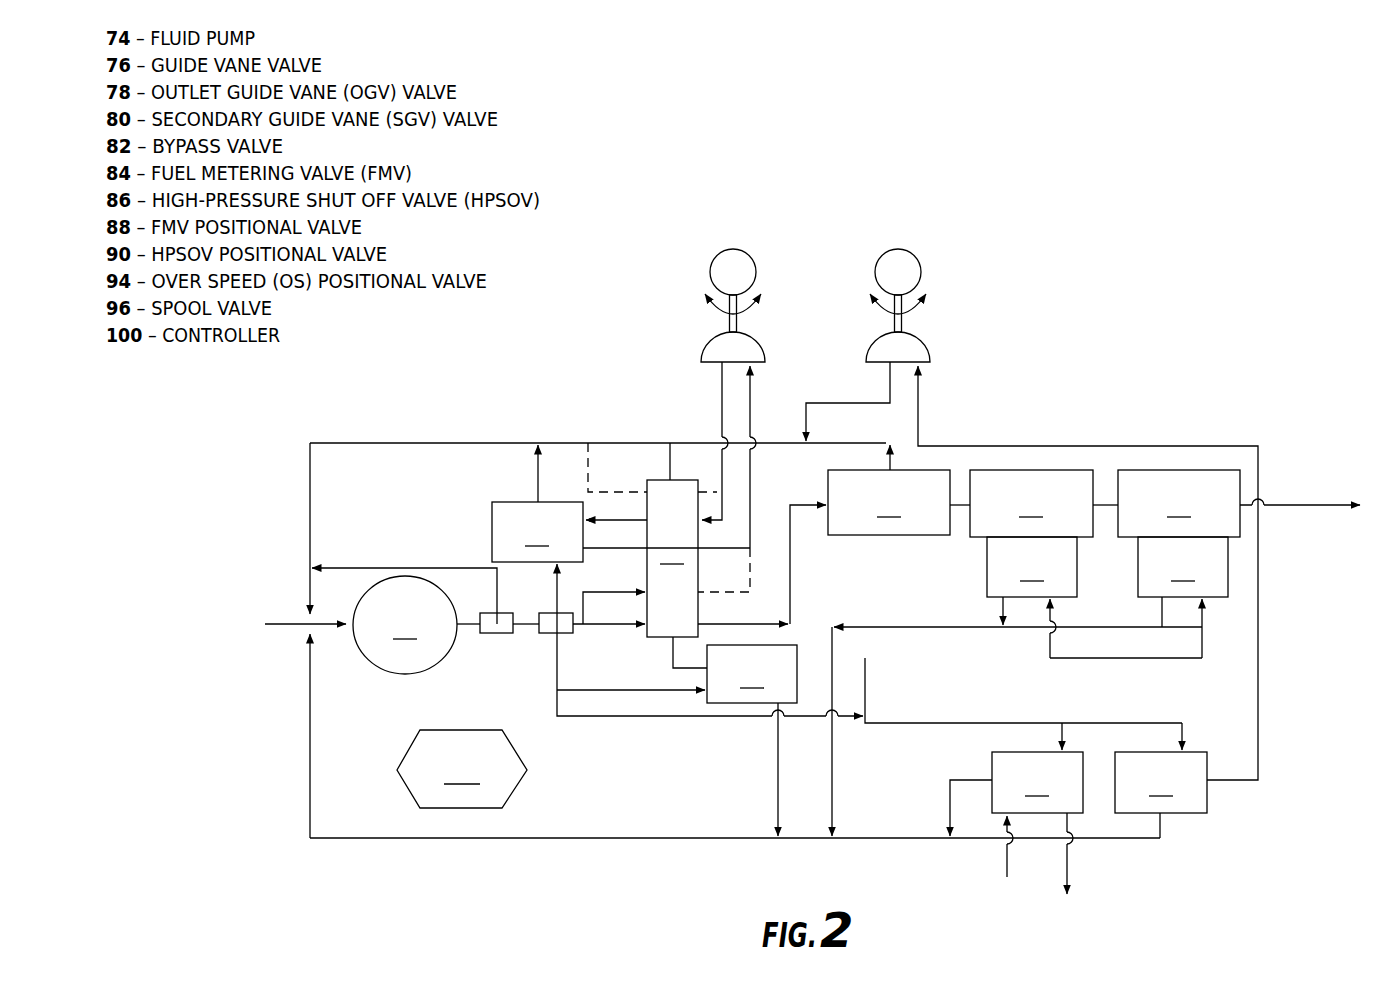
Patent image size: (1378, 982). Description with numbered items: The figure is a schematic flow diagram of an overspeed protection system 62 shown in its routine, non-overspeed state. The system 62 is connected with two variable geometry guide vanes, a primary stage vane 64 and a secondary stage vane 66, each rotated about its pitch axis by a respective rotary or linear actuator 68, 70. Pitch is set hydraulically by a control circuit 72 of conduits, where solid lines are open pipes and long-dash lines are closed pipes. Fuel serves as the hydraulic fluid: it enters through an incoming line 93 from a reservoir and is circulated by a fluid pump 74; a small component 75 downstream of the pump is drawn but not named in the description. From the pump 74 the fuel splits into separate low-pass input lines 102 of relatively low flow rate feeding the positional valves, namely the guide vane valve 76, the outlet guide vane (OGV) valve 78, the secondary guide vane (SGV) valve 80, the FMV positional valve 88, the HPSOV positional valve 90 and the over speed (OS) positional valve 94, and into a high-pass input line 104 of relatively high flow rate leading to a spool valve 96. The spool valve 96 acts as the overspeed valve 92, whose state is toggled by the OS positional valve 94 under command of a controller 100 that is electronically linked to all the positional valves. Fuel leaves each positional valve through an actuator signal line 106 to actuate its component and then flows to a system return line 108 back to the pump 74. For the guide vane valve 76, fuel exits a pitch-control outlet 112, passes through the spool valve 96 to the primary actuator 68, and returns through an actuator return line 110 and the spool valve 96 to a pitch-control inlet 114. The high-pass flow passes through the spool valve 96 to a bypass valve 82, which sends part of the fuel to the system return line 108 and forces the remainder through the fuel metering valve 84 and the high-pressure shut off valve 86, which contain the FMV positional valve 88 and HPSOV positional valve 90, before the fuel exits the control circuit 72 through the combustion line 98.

The overspeed protection system 62 is at (442, 396).
The primary stage vane 64 is at (712, 262).
The secondary stage vane 66 is at (887, 258).
The actuator 68 is at (712, 346).
The actuator 70 is at (936, 352).
The control circuit 72 is at (438, 848).
The fluid pump 74 is at (405, 625).
The filter 75 is at (497, 634).
The guide vane valve 76 is at (537, 532).
The outlet guide vane (OGV) valve 78 is at (1037, 782).
The secondary guide vane (SGV) valve 80 is at (1161, 782).
The bypass valve 82 is at (889, 490).
The fuel metering valve 84 is at (1031, 503).
The high-pressure shut off valve 86 is at (1179, 503).
The FMV positional valve 88 is at (1032, 567).
The HPSOV positional valve 90 is at (1183, 567).
The overspeed valve 92 is at (684, 478).
The incoming line 93 is at (287, 622).
The over speed (OS) positional valve 94 is at (752, 674).
The spool valve 96 is at (672, 558).
The combustion line 98 is at (1318, 505).
The controller 100 is at (462, 769).
The low-pass input lines 102 is at (557, 670).
The high-pass input line 104 is at (612, 630).
The actuator signal line 106 is at (610, 549).
The system return line 108 is at (546, 433).
The actuator return line 110 is at (718, 392).
The pitch-control outlet 112 is at (590, 562).
The pitch-control inlet 114 is at (590, 518).